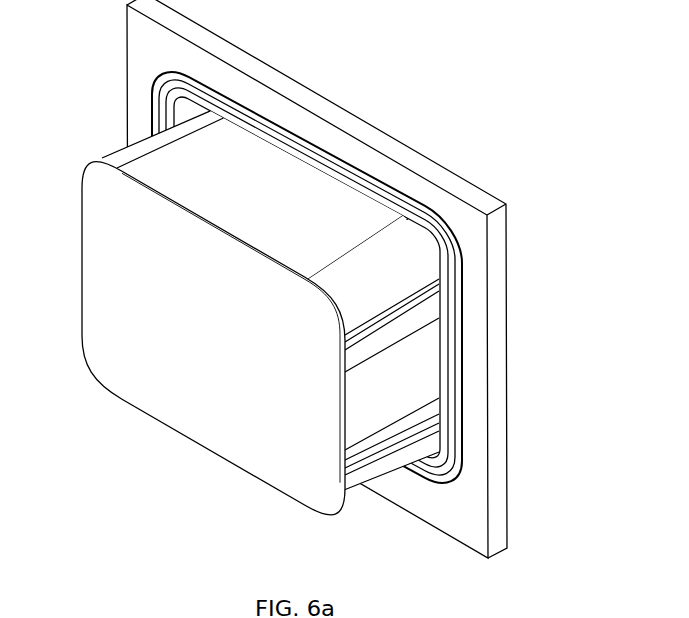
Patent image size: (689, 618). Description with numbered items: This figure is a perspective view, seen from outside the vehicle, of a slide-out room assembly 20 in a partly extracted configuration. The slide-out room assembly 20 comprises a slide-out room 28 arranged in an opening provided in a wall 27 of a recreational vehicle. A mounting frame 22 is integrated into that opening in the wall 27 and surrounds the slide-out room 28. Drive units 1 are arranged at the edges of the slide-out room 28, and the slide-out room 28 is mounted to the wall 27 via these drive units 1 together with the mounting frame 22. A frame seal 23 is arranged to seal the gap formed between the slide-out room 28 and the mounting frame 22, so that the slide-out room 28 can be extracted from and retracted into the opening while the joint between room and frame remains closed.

The drive unit 1 is at (100, 129).
The slide-out room assembly 20 is at (421, 111).
The mounting frame 22 is at (457, 384).
The frame seal 23 is at (446, 327).
The wall 27 is at (221, 75).
The slide-out room 28 is at (188, 343).